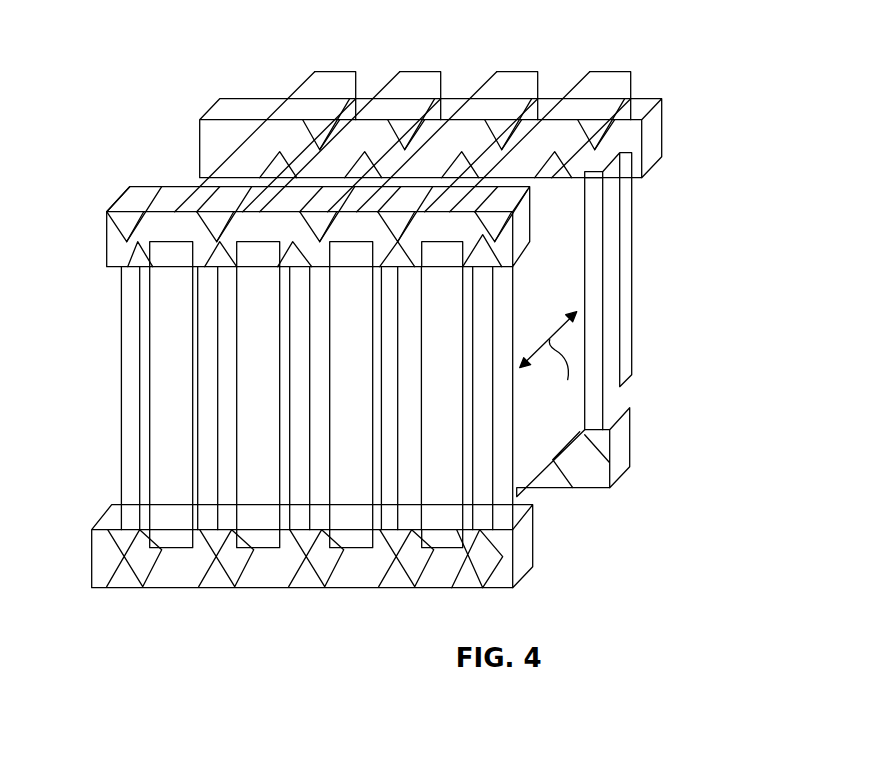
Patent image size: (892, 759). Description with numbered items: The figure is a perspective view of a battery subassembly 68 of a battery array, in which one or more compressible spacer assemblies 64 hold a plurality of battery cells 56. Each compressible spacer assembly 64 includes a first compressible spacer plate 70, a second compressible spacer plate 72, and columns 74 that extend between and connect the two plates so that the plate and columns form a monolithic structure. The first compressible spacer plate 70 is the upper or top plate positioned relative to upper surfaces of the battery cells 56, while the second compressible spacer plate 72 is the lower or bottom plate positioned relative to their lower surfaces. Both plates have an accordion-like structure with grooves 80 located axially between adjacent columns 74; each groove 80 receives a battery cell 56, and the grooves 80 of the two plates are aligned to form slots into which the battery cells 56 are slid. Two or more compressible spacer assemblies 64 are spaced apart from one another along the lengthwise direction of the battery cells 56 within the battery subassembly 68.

The battery subassembly 68 is at (645, 53).
The compressible spacer assembly 64 is at (194, 139).
The first compressible spacer plate 70 is at (243, 104).
The grooves 80 is at (260, 240).
The columns 74 is at (302, 322).
The second compressible spacer plate 72 is at (607, 477).
The battery cells 56 is at (158, 406).